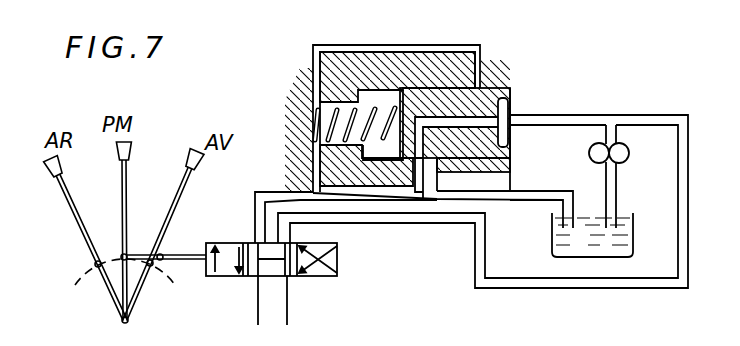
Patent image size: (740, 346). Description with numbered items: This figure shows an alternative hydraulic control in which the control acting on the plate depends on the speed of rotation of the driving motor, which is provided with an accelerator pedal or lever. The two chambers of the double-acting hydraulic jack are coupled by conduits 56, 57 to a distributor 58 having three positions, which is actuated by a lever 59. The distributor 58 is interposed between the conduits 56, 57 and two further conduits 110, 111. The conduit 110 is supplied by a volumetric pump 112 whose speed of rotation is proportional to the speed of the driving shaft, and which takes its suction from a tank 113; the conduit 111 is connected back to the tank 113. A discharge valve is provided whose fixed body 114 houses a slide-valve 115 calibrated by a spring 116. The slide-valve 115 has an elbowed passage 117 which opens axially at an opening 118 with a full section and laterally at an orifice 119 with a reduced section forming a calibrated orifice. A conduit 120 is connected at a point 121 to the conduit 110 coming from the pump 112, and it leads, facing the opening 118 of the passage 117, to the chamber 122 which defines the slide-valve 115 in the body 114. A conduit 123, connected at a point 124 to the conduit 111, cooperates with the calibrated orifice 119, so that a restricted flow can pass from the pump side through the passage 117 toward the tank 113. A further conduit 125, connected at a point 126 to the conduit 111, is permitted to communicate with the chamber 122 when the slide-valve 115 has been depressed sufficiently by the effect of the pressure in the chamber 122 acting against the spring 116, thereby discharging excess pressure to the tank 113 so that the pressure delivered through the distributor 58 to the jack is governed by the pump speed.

The conduit 56 is at (288, 292).
The conduit 57 is at (258, 290).
The distributor 58 is at (338, 259).
The lever 59 is at (182, 176).
The conduit 110 is at (475, 282).
The conduit 111 is at (256, 215).
The volumetric pump 112 is at (628, 149).
The tank 113 is at (633, 222).
The fixed body 114 is at (293, 88).
The slide-valve 115 is at (432, 90).
The spring 116 is at (372, 125).
The elbowed passage 117 is at (490, 117).
The axial opening 118 is at (506, 100).
The calibrated orifice 119 is at (431, 162).
The conduit 120 is at (506, 197).
The connection point 121 is at (546, 127).
The chamber 122 is at (507, 160).
The conduit 123 is at (403, 186).
The connection point 124 is at (416, 190).
The conduit 125 is at (473, 49).
The connection point 126 is at (313, 187).